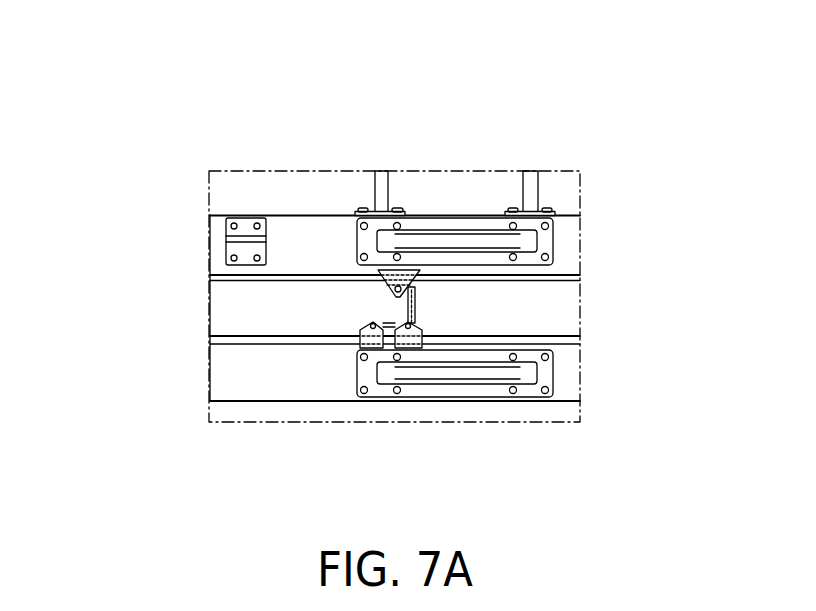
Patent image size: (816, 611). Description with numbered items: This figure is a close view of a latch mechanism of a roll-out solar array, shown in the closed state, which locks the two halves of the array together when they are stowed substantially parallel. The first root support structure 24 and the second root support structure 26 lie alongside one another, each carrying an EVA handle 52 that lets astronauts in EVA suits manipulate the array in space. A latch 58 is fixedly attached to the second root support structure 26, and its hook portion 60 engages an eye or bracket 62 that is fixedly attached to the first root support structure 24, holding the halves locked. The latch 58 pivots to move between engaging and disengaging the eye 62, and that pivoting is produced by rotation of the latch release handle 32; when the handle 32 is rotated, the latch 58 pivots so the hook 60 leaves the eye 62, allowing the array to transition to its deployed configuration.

The first root support structure 24 is at (282, 233).
The second root support structure 26 is at (277, 378).
The EVA handle 52 is at (438, 237).
The latch release handle 32 is at (397, 375).
The latch 58 is at (408, 316).
The hook portion 60 is at (412, 287).
The eye or bracket 62 is at (398, 296).